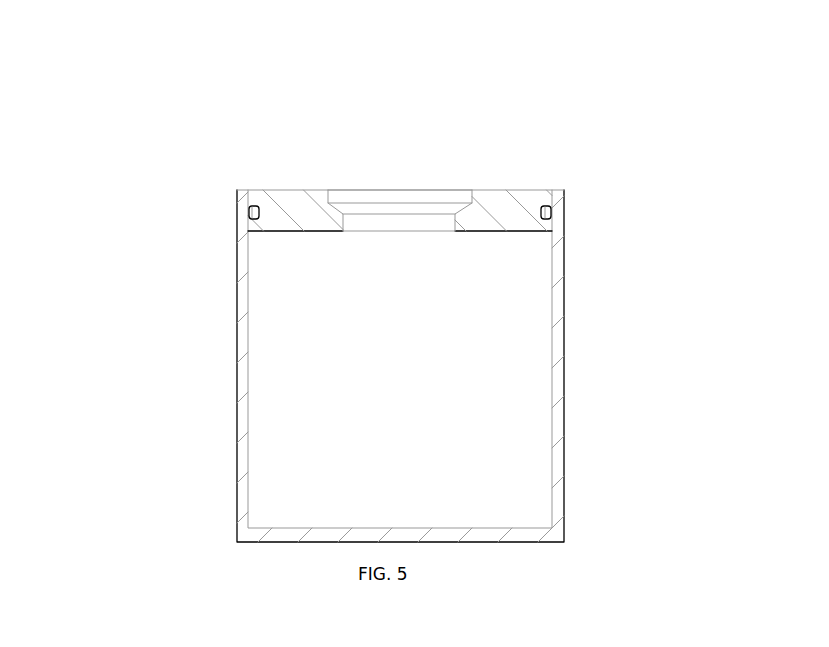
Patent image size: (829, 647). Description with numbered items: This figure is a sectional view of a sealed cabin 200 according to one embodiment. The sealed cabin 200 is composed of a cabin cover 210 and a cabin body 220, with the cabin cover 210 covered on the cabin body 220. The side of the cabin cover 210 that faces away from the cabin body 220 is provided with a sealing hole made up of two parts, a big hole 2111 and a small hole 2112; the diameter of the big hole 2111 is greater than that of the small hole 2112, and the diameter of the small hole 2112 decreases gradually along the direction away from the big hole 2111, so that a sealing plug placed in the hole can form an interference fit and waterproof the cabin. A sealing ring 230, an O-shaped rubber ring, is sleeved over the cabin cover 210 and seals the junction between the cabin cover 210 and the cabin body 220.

The sealed cabin 200 is at (386, 273).
The cabin cover 210 is at (305, 220).
The big hole 2111 is at (443, 194).
The small hole 2112 is at (382, 208).
The cabin body 220 is at (552, 318).
The sealing ring 230 is at (481, 209).